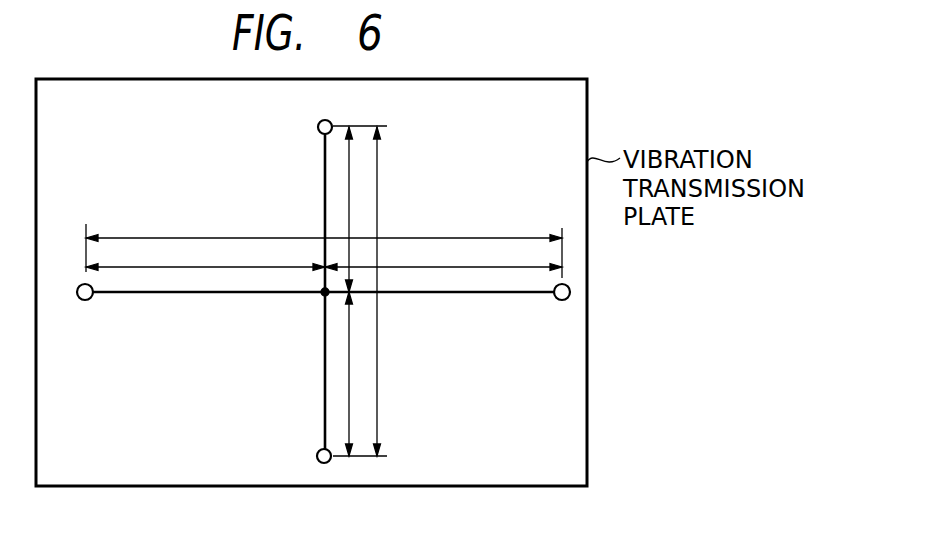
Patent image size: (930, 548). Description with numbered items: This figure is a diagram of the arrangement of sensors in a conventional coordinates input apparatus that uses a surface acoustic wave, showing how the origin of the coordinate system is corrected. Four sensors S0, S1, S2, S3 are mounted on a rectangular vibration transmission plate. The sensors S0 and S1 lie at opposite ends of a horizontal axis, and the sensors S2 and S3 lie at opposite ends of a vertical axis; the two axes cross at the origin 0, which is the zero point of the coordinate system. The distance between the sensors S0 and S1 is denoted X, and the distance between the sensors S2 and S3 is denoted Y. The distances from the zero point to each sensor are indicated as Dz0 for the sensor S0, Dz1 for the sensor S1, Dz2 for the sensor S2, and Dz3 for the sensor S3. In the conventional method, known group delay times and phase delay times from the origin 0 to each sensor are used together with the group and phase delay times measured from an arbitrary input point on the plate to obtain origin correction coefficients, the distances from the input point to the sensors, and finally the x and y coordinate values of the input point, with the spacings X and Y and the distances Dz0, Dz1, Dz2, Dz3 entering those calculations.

The sensor S0 is at (86, 309).
The sensor S1 is at (567, 309).
The sensor S2 is at (308, 120).
The sensor S3 is at (307, 458).
The origin 0 is at (317, 307).
The distance between the sensors S0 and S1 X is at (324, 227).
The distance between the sensors S2 and S3 Y is at (377, 204).
The distance between the sensor and the zero point Dz0 is at (183, 265).
The distance between the sensor and the zero point Dz1 is at (463, 266).
The distance between the sensor and the zero point Dz2 is at (349, 180).
The distance between the sensor and the zero point Dz3 is at (349, 370).